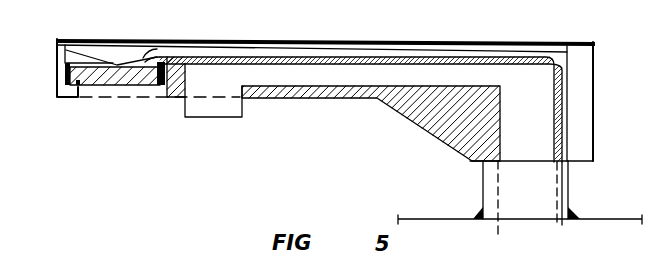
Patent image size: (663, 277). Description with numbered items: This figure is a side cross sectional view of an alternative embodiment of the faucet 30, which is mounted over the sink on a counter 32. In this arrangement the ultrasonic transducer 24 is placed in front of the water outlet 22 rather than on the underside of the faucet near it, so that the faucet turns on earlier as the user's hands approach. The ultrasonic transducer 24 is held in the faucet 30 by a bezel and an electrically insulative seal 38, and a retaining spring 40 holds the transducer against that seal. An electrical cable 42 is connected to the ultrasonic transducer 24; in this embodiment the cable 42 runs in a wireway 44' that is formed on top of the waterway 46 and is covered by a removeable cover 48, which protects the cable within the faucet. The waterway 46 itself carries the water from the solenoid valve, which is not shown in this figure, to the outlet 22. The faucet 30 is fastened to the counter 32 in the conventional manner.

The outlet 22 is at (242, 118).
The ultrasonic transducer 24 is at (111, 78).
The faucet 30 is at (593, 104).
The counter 32 is at (607, 218).
The electrically insulative seal 38 is at (67, 77).
The retaining spring 40 is at (82, 47).
The electrical cable 42 is at (563, 222).
The wireway 44' is at (357, 92).
The waterway 46 is at (570, 182).
The removeable cover 48 is at (592, 43).